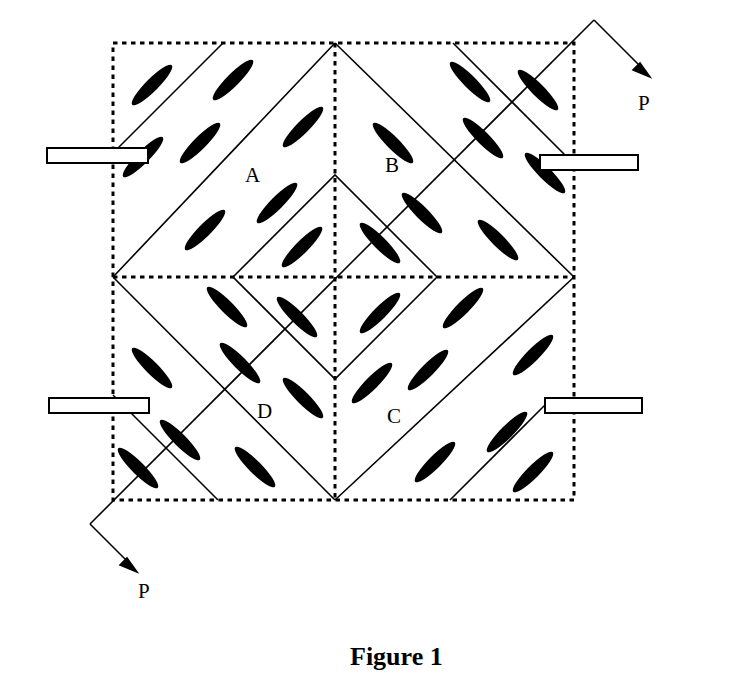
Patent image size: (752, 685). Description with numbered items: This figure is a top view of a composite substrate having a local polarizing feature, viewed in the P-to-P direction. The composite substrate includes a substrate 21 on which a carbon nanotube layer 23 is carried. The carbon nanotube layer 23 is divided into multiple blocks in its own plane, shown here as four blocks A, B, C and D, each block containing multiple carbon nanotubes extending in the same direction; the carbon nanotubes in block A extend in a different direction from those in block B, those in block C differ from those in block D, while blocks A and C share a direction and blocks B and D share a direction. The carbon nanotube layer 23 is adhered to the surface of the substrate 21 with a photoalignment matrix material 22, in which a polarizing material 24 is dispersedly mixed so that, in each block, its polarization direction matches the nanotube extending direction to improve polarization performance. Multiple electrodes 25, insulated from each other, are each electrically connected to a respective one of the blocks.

The substrate 21 is at (575, 340).
The photoalignment matrix material 22 is at (380, 480).
The carbon nanotube layer 23 is at (530, 237).
The polarizing material 24 is at (548, 458).
The electrodes 25 is at (92, 148).